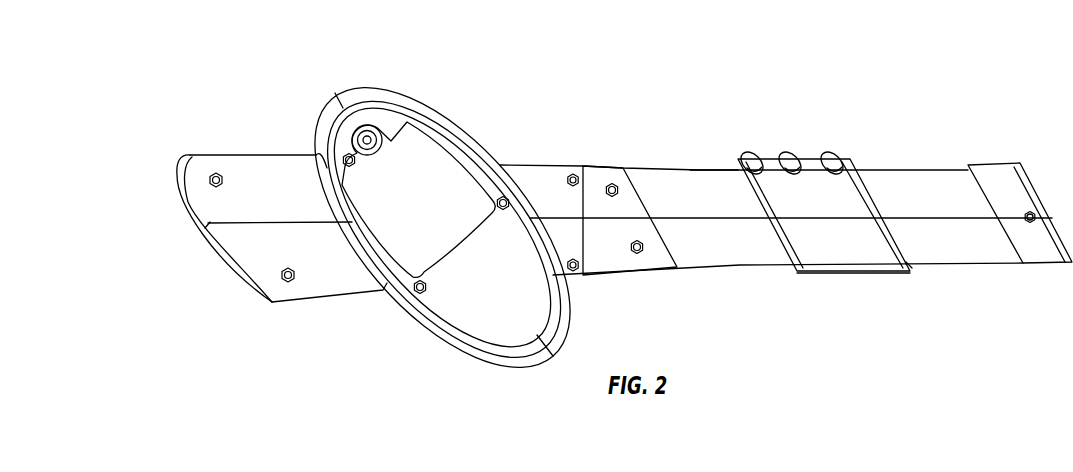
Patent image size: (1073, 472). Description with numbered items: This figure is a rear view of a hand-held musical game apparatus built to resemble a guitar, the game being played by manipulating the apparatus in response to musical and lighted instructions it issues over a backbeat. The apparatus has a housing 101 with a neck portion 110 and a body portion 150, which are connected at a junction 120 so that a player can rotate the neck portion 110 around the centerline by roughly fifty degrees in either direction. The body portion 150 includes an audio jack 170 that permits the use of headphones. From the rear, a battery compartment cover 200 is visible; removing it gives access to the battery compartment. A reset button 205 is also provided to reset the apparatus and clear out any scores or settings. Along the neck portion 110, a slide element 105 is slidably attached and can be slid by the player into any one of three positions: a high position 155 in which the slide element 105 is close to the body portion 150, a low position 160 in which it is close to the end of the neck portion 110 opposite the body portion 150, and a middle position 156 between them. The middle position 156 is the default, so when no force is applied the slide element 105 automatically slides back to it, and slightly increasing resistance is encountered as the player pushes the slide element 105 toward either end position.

The housing 101 is at (612, 278).
The slide element 105 is at (808, 158).
The neck portion 110 is at (692, 155).
The junction 120 is at (585, 173).
The body portion 150 is at (300, 138).
The high position 155 is at (745, 275).
The middle position 156 is at (852, 290).
The low position 160 is at (963, 273).
The audio jack 170 is at (203, 234).
The battery compartment cover 200 is at (440, 170).
The reset button 205 is at (290, 248).